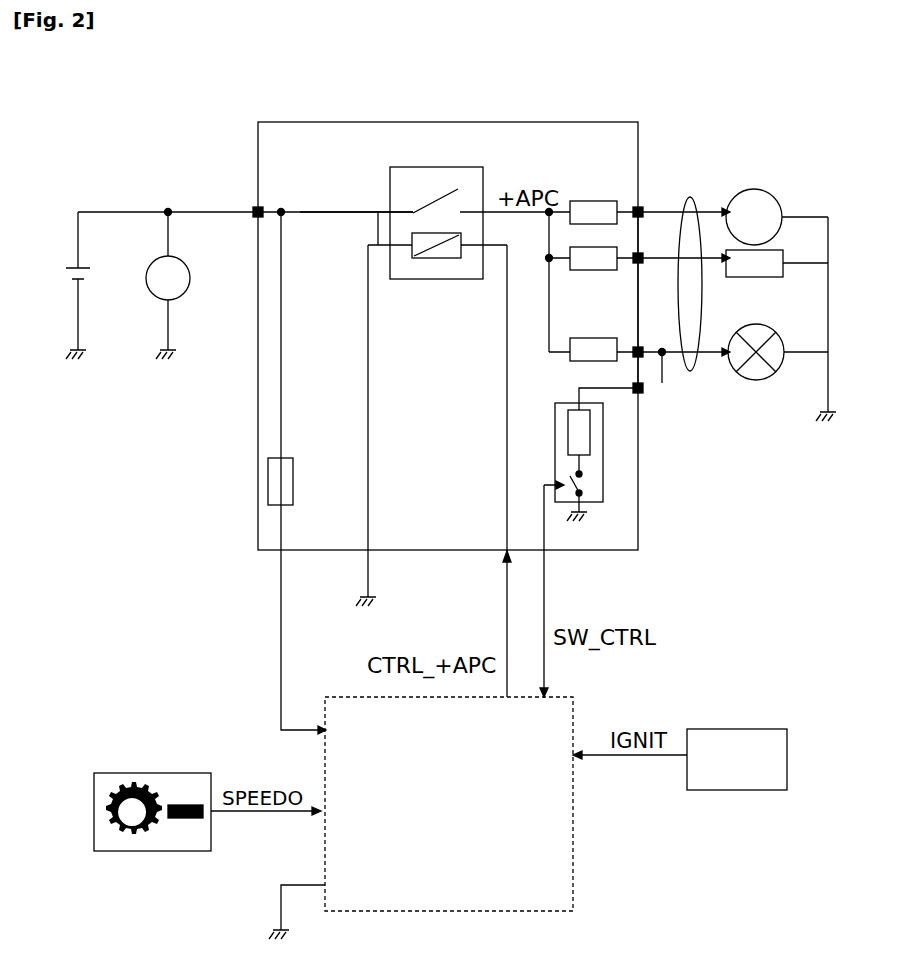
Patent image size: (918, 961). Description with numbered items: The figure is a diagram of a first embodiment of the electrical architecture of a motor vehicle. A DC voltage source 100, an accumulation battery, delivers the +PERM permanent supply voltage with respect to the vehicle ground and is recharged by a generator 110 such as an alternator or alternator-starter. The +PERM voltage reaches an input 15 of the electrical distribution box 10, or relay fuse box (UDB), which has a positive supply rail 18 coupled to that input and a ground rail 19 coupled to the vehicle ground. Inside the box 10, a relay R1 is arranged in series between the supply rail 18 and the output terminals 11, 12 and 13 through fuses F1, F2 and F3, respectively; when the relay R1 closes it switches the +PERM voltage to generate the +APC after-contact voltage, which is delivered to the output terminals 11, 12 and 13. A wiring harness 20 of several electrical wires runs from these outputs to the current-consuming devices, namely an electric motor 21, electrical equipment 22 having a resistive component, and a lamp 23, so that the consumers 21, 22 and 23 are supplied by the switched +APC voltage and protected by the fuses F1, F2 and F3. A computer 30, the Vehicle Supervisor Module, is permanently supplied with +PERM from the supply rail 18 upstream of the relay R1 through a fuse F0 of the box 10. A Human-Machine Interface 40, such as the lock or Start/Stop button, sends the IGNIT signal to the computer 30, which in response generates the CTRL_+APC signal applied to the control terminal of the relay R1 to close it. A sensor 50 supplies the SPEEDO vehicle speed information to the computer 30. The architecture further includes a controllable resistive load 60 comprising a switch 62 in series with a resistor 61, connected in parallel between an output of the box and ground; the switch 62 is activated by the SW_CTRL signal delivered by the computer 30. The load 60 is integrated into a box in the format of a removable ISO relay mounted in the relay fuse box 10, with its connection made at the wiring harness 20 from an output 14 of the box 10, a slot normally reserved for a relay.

The electrical distribution box 10 is at (278, 122).
The output terminal 11 is at (639, 212).
The output terminal 12 is at (641, 258).
The output terminal 13 is at (640, 355).
The output 14 is at (641, 389).
The input 15 is at (257, 210).
The positive supply rail 18 is at (377, 212).
The ground rail 19 is at (357, 212).
The relay R1 is at (408, 175).
The fuse F0 is at (273, 480).
The fuse F1 is at (593, 200).
The fuse F2 is at (588, 247).
The fuse F3 is at (588, 338).
The wiring harness 20 is at (690, 197).
The electric motor 21 is at (754, 189).
The electrical equipment 22 is at (772, 262).
The lamp 23 is at (757, 324).
The computer 30 is at (575, 818).
The Human-Machine Interface 40 is at (738, 729).
The sensor 50 is at (152, 773).
The controllable resistive load 60 is at (604, 412).
The resistor 61 is at (592, 427).
The switch 62 is at (587, 485).
The DC voltage source 100 is at (85, 283).
The generator 110 is at (177, 306).